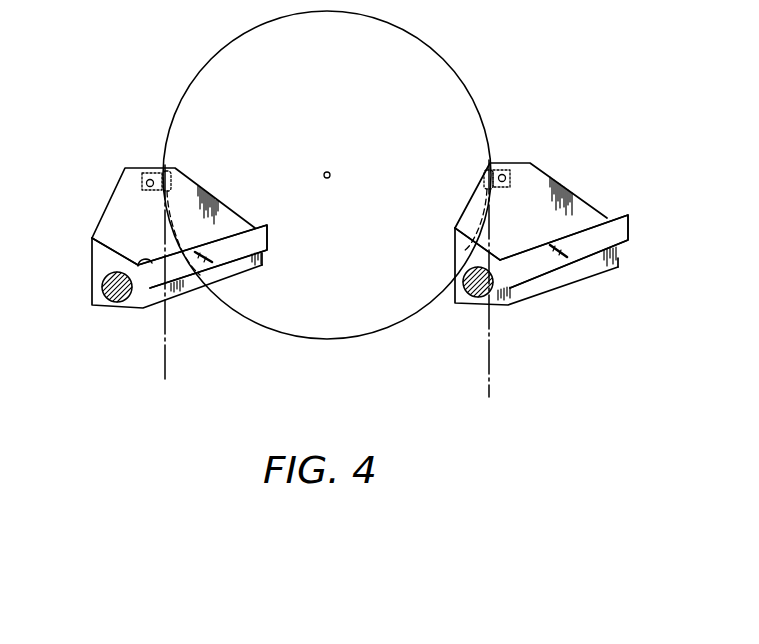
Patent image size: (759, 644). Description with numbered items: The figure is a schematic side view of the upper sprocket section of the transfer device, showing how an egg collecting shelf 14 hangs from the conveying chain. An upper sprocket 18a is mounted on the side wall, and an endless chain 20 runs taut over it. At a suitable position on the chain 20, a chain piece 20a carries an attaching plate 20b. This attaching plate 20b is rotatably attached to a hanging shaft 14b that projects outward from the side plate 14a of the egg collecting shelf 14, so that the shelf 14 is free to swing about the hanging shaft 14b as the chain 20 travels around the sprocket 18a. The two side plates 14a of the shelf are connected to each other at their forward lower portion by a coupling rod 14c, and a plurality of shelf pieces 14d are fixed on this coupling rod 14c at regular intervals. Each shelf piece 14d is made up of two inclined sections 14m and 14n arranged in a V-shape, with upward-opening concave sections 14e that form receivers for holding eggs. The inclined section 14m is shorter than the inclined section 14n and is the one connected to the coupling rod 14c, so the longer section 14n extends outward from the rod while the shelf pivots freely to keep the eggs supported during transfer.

The egg collecting shelf 14 is at (118, 179).
The side plate 14a is at (197, 200).
The hanging shaft 14b is at (150, 187).
The coupling rod 14c is at (103, 300).
The shelf piece 14d is at (182, 275).
The concave section 14e is at (153, 267).
The inclined section 14m is at (102, 258).
The inclined section 14n is at (256, 238).
The sprocket 18a is at (437, 82).
The chain 20 is at (492, 370).
The chain piece 20a is at (170, 171).
The attaching plate 20b is at (142, 172).